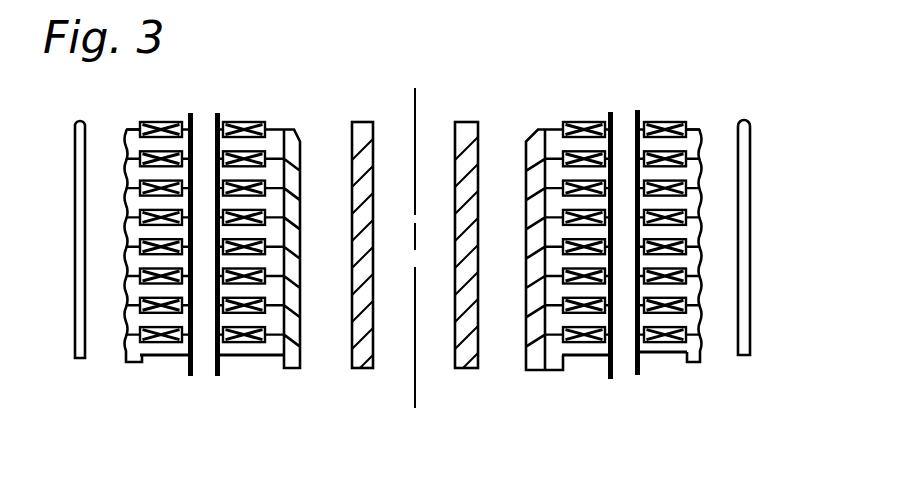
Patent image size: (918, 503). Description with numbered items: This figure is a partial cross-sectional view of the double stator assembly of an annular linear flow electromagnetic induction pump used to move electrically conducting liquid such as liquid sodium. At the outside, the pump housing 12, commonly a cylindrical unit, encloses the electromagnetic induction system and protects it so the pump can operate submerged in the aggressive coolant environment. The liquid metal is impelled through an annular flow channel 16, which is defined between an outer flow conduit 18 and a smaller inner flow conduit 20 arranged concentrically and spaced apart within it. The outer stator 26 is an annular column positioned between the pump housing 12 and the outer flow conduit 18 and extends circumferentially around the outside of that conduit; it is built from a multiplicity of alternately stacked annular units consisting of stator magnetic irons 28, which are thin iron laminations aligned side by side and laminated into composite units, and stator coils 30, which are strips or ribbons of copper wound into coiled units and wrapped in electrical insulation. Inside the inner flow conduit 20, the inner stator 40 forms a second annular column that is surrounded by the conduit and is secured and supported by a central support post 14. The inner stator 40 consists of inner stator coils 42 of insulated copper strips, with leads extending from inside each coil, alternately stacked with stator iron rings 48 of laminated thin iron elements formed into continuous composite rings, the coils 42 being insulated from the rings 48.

The pump housing 12 is at (751, 140).
The central support post 14 is at (468, 121).
The annular flow channel 16 is at (627, 370).
The outer flow conduit 18 is at (639, 114).
The inner flow conduit 20 is at (612, 112).
The outer stator 26 is at (702, 346).
The stator magnetic irons 28 is at (168, 356).
The stator coils 30 is at (147, 337).
The inner stator 40 is at (553, 366).
The inner stator coils 42 is at (268, 350).
The stator iron rings 48 is at (252, 356).